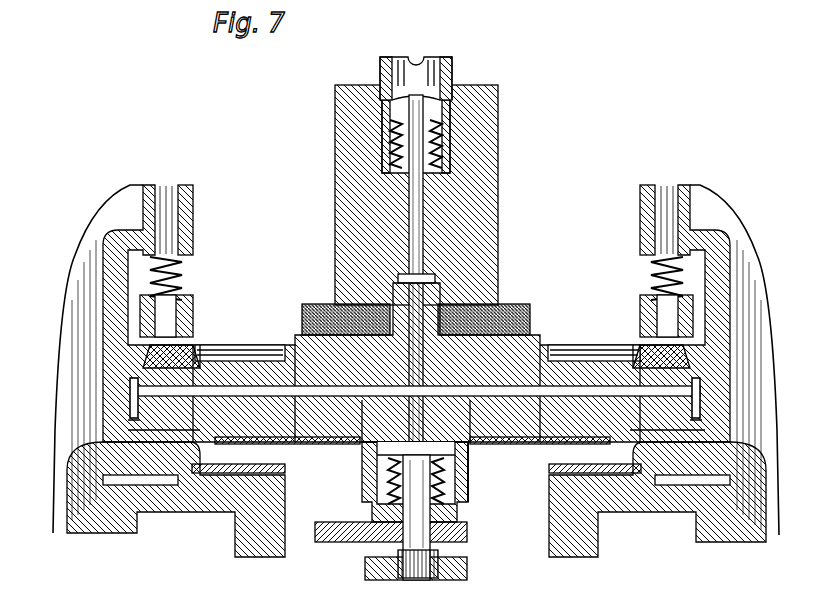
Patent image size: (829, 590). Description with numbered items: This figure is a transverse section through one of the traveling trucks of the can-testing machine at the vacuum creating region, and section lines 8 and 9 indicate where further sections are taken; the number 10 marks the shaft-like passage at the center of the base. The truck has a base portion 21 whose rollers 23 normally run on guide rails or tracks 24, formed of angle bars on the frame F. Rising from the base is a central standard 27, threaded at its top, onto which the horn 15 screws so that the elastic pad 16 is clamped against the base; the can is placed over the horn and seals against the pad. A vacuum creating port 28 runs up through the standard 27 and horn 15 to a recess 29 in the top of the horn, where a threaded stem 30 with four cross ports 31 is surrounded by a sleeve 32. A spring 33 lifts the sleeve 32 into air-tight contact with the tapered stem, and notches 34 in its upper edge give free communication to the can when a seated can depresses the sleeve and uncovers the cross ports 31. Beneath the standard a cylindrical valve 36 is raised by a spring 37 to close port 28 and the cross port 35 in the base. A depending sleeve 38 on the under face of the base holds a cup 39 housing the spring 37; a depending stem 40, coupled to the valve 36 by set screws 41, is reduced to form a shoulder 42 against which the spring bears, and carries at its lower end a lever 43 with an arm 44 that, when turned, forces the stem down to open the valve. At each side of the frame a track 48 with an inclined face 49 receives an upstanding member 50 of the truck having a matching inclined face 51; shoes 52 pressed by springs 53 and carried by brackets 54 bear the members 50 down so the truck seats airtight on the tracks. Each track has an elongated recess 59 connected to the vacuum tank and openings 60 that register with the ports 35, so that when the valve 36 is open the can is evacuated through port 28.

The section line 8- 8 is at (128, 185).
The section line 9- 9 is at (320, 128).
The shaft 10 is at (417, 394).
The horn 15 is at (494, 220).
The elastic pad 16 is at (507, 310).
The base portion 21 is at (310, 304).
The rollers 23 is at (572, 343).
The guide rails or tracks 24 is at (286, 472).
The central standard 27 is at (438, 297).
The vacuum creating port or passage 28 is at (440, 290).
The recess 29 is at (450, 165).
The stem 30 is at (440, 135).
The cross ports 31 is at (432, 118).
The sleeve 32 is at (450, 92).
The spring 33 is at (445, 160).
The notches 34 is at (414, 58).
The cross port or passage 35 is at (258, 372).
The cylindrical valve 36 is at (445, 382).
The spring 37 is at (447, 474).
The depending sleeve 38 is at (470, 480).
The cup 39 is at (466, 524).
The depending stem 40 is at (467, 567).
The set screws 41 is at (363, 447).
The shoulder 42 is at (388, 462).
The lever 43 is at (447, 550).
The arm 44 is at (365, 556).
The tracks 48 is at (133, 419).
The inclined faces 49 is at (133, 381).
The upstanding member 50 is at (235, 350).
The inclined face 51 is at (165, 355).
The shoes 52 is at (193, 304).
The springs 53 is at (182, 272).
The brackets 54 is at (113, 277).
The elongated recess 59 is at (133, 404).
The openings 60 is at (178, 470).
The frame F is at (235, 545).